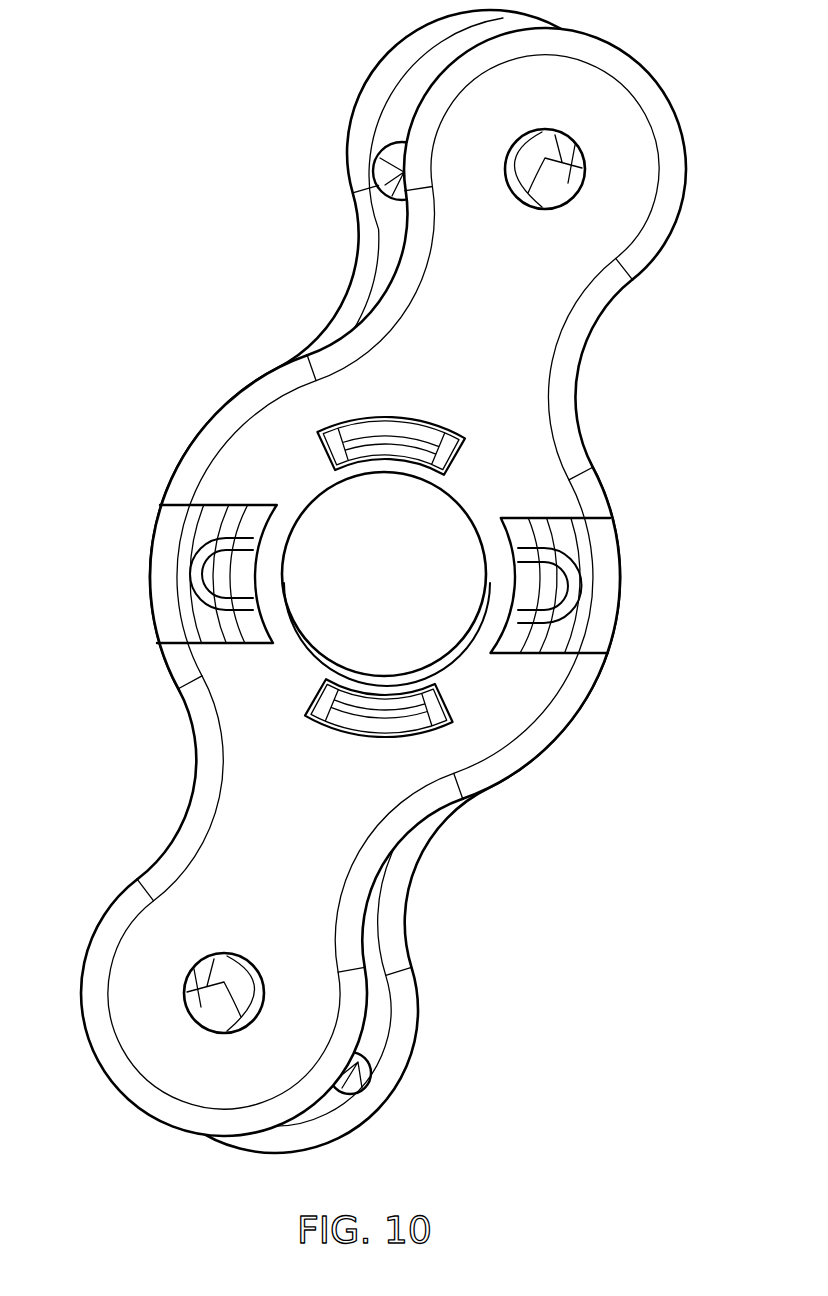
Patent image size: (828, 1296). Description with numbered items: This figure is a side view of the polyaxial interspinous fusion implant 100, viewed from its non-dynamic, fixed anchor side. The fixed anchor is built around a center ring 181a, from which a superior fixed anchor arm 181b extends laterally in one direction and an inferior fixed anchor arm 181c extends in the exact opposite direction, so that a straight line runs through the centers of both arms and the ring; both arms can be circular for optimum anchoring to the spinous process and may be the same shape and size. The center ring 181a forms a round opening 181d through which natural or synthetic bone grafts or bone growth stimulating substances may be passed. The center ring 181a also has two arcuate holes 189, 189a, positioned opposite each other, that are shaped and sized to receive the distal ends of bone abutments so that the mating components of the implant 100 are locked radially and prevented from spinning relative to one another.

The polyaxial interspinous fusion implant 100 is at (184, 104).
The center ring 181a is at (336, 577).
The superior fixed anchor arm 181b is at (617, 95).
The inferior fixed anchor arm 181c is at (178, 1077).
The round opening 181d is at (322, 576).
The hole 189 is at (337, 443).
The hole 189a is at (322, 712).